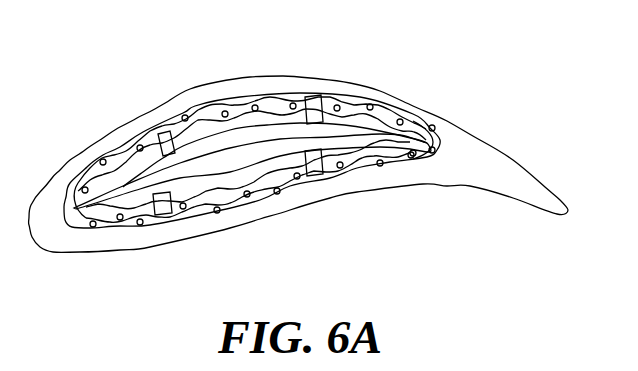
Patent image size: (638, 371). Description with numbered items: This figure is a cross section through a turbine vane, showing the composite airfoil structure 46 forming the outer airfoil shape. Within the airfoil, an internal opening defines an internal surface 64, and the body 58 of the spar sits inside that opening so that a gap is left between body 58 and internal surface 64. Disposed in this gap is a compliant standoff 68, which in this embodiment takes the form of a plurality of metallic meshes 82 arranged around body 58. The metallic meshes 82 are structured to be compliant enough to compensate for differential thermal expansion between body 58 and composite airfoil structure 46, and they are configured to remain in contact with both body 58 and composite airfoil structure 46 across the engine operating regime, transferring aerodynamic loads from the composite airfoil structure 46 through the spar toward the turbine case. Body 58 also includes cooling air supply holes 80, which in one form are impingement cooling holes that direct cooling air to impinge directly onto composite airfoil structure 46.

The composite airfoil structure 46 is at (508, 195).
The body 58 is at (245, 115).
The internal surface 64 is at (431, 168).
The standoff 68 is at (195, 99).
The cooling air supply holes 80 is at (322, 97).
The metallic meshes 82 is at (117, 150).